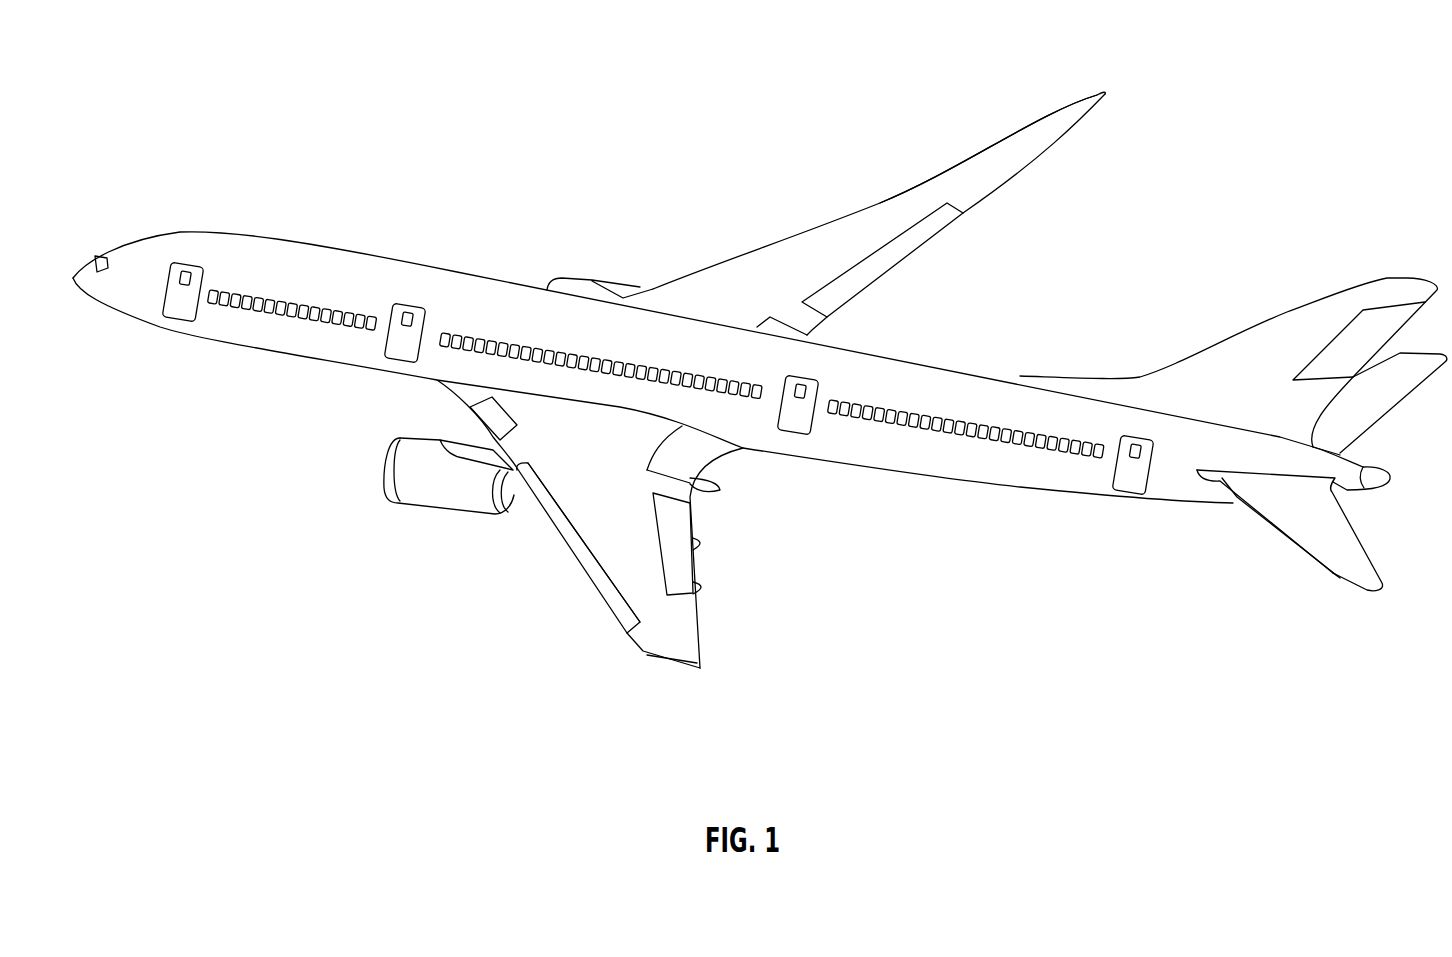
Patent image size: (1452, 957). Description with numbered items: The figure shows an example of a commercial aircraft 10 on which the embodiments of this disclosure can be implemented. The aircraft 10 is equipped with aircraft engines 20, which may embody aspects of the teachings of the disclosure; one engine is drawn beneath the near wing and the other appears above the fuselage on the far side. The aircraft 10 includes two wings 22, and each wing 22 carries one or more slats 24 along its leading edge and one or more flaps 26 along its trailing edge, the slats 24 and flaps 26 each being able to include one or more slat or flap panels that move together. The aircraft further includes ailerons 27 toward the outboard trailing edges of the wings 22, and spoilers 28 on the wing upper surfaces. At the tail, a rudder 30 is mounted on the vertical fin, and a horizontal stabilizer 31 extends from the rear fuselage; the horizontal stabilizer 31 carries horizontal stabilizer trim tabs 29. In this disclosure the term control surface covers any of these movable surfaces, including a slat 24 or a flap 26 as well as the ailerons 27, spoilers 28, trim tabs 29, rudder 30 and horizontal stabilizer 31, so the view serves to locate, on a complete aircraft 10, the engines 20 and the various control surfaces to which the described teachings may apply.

The commercial aircraft 10 is at (1266, 102).
The aircraft engines 20 is at (583, 290).
The wings 22 is at (878, 210).
The slats 24 is at (593, 577).
The flaps 26 is at (908, 250).
The ailerons 27 is at (1028, 168).
The spoilers 28 is at (974, 153).
The horizontal stabilizer trim tabs 29 is at (1251, 523).
The rudder 30 is at (1352, 337).
The horizontal stabilizer 31 is at (1332, 533).